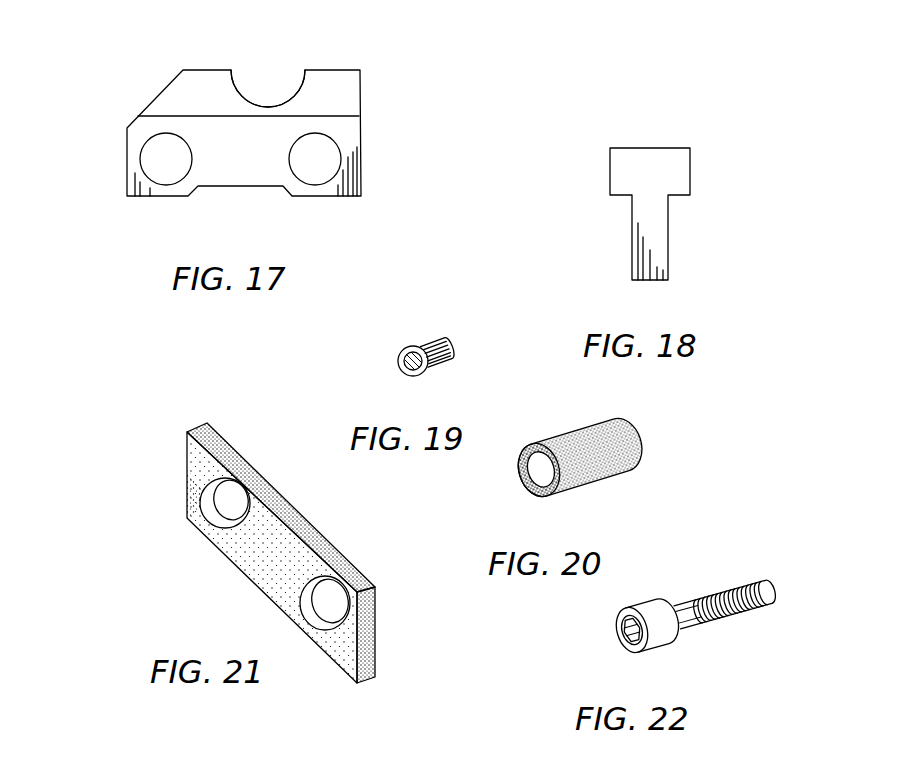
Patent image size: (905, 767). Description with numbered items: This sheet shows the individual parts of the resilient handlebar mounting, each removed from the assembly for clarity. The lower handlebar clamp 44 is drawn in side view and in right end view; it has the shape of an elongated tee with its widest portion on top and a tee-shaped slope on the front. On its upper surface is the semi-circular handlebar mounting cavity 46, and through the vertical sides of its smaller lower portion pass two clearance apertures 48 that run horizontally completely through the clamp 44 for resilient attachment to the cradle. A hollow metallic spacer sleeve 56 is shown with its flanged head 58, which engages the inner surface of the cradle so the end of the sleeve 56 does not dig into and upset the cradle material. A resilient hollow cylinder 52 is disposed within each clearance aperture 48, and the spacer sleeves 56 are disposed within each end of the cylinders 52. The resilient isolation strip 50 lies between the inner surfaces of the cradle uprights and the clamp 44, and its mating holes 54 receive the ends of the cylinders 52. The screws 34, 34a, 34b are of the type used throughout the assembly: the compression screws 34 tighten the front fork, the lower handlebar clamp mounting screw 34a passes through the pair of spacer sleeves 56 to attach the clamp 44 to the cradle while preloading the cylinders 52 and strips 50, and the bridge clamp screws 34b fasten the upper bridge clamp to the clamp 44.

In FIG. 22, the front fork mounting ring compression screw 34 is at (705, 594).
In FIG. 22, the lower handlebar clamp mounting screw 34a is at (705, 594).
In FIG. 22, the handlebar bridge clamp screw 34b is at (669, 608).
In FIG. 17, the lower handlebar clamp 44 is at (148, 105).
In FIG. 18, the lower handlebar clamp 44 is at (655, 148).
In FIG. 17, the semi-circular handlebar mounting cavity 46 is at (242, 92).
In FIG. 17, the clearance aperture 48 is at (138, 177).
In FIG. 21, the resilient isolation strip 50 is at (187, 462).
In FIG. 20, the resilient hollow cylinder 52 is at (643, 443).
In FIG. 21, the mating hole 54 is at (188, 520).
In FIG. 19, the hollow metallic spacer sleeve 56 is at (510, 292).
In FIG. 19, the flanged head 58 is at (398, 352).